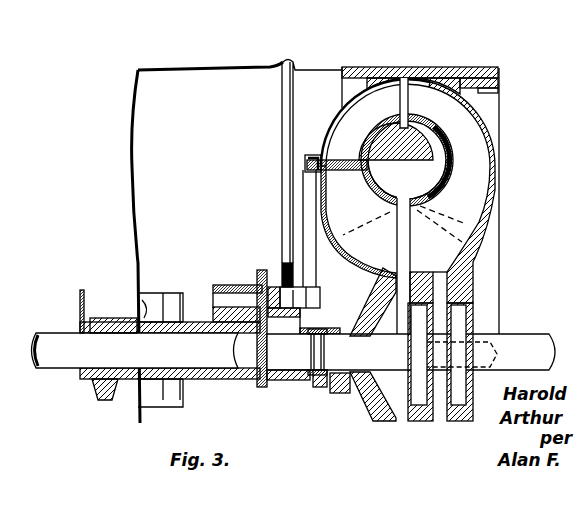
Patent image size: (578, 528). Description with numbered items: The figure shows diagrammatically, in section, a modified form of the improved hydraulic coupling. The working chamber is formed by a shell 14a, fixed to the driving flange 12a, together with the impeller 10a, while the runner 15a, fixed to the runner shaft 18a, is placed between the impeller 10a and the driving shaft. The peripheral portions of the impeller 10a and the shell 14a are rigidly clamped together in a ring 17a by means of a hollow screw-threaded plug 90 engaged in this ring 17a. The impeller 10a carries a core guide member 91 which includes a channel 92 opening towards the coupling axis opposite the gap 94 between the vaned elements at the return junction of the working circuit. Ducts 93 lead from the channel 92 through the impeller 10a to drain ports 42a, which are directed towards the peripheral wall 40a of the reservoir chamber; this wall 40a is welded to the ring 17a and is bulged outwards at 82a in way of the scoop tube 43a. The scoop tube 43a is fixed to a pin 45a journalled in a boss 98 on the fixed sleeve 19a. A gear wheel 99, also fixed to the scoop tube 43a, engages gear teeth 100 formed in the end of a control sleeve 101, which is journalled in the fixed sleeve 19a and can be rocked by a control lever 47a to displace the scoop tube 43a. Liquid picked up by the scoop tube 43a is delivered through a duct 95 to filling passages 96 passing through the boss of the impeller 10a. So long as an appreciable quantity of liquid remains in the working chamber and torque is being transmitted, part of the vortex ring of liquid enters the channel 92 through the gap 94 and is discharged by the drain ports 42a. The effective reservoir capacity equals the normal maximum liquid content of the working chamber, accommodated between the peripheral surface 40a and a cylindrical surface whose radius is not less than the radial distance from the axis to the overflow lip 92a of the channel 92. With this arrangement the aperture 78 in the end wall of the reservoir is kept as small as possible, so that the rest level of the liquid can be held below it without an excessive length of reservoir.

The peripheral wall 40a is at (218, 68).
The bulge 82a is at (300, 66).
The ring 17a is at (366, 70).
The hollow screw-threaded plug 90 is at (499, 83).
The impeller 10a is at (334, 120).
The core guide member 91 is at (390, 122).
The drain ports 42a is at (310, 158).
The scoop tube 43a is at (283, 183).
The ducts 93 is at (337, 178).
The runner 15a is at (493, 143).
The channel 92 is at (407, 179).
The overflow lip 92a is at (440, 188).
The shell 14a is at (500, 192).
The gap 94 is at (404, 206).
The driving flange 12a is at (457, 315).
The gear wheel 99 is at (262, 268).
The boss 98 is at (222, 287).
The control lever 47a is at (80, 294).
The aperture 78 is at (147, 310).
The pin 45a is at (213, 292).
The duct 95 is at (323, 316).
The filling passages 96 is at (374, 303).
The control sleeve 101 is at (158, 334).
The runner shaft 18a is at (411, 352).
The gear teeth 100 is at (259, 381).
The fixed sleeve 19a is at (297, 383).